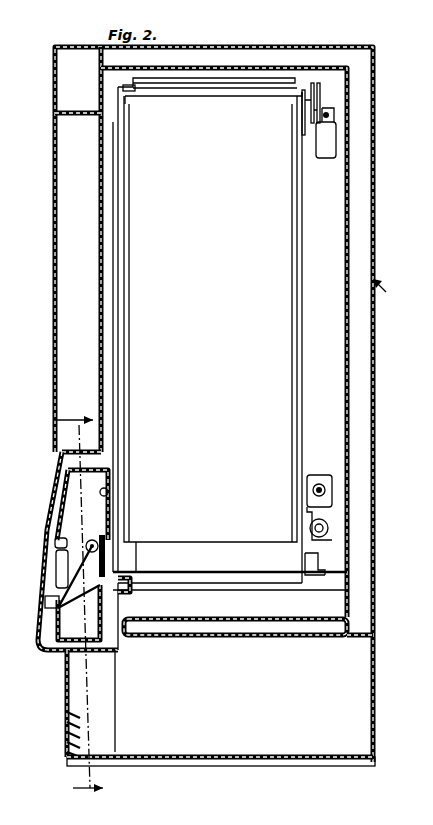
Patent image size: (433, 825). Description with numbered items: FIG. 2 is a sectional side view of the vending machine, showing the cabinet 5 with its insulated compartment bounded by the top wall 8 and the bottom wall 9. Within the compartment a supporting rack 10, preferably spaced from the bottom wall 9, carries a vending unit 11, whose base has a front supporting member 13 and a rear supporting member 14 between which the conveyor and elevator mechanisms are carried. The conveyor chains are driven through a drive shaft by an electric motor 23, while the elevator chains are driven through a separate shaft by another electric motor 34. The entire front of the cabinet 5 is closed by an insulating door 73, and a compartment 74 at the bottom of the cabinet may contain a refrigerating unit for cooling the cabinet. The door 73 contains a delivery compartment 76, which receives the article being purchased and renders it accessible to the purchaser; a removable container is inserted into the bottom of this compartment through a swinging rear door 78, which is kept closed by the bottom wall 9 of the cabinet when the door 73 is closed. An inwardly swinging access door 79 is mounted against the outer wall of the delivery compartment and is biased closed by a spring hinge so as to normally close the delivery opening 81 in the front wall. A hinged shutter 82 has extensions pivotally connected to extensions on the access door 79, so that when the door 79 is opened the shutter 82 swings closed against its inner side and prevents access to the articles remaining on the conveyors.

The cabinet 5 is at (213, 539).
The top wall 8 is at (270, 68).
The bottom wall 9 is at (213, 628).
The supporting rack 10 is at (204, 592).
The vending unit 11 is at (216, 494).
The front supporting member 13 is at (136, 560).
The rear supporting member 14 is at (305, 565).
The electric motor 23 is at (307, 487).
The electric motor 34 is at (316, 149).
The insulating door 73 is at (55, 334).
The compartment 74 is at (238, 758).
The delivery compartment 76 is at (50, 600).
The swinging rear door 78 is at (122, 606).
The access door 79 is at (58, 567).
The delivery opening 81 is at (55, 544).
The shutter 82 is at (92, 540).